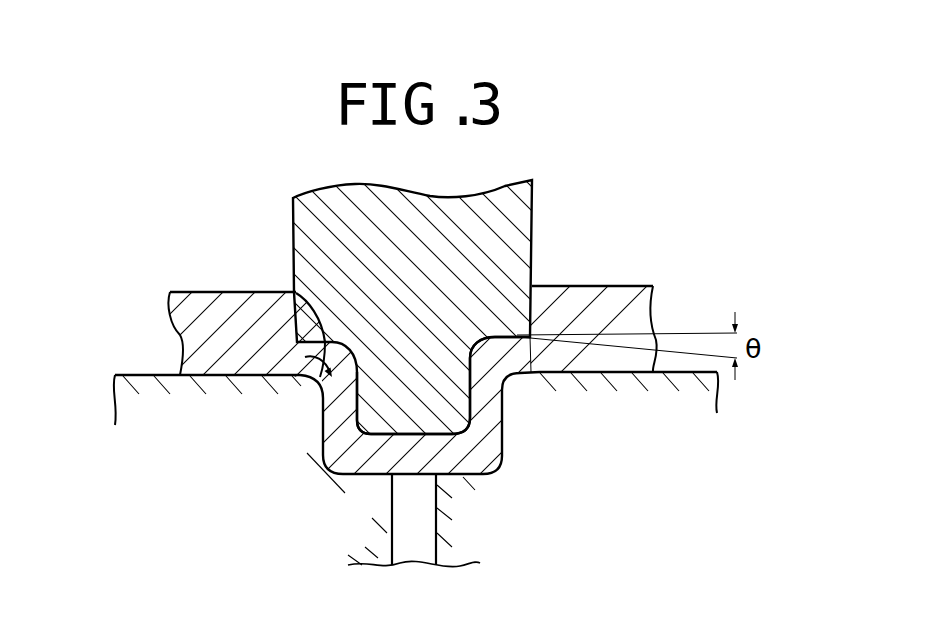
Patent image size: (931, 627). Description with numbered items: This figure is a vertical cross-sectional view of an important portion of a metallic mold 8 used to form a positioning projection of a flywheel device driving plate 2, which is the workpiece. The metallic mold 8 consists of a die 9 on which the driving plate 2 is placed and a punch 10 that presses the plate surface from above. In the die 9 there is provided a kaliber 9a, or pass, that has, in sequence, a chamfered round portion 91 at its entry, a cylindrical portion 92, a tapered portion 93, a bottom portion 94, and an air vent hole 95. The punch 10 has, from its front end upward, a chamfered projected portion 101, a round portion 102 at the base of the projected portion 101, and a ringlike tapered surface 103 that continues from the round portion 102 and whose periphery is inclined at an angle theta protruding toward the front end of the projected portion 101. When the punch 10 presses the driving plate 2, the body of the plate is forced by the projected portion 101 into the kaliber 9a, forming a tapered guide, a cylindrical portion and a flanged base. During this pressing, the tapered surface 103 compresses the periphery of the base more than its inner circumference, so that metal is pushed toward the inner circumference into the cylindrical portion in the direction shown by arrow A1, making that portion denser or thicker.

The metallic mold 8 is at (668, 195).
The punch 10 is at (522, 225).
The chamfered projected portion 101 is at (447, 407).
The round portion 102 is at (522, 392).
The ringlike tapered surface 103 is at (540, 375).
The driving plate 2 is at (203, 293).
The arrow A1 is at (293, 278).
The die 9 is at (144, 375).
The chamfered round portion 91 is at (312, 390).
The cylindrical portion 92 is at (320, 430).
The tapered portion 93 is at (330, 473).
The bottom portion 94 is at (378, 475).
The air vent hole 95 is at (430, 525).
The kaliber 9a is at (500, 473).